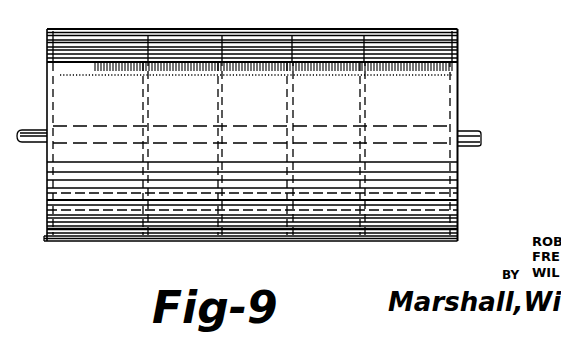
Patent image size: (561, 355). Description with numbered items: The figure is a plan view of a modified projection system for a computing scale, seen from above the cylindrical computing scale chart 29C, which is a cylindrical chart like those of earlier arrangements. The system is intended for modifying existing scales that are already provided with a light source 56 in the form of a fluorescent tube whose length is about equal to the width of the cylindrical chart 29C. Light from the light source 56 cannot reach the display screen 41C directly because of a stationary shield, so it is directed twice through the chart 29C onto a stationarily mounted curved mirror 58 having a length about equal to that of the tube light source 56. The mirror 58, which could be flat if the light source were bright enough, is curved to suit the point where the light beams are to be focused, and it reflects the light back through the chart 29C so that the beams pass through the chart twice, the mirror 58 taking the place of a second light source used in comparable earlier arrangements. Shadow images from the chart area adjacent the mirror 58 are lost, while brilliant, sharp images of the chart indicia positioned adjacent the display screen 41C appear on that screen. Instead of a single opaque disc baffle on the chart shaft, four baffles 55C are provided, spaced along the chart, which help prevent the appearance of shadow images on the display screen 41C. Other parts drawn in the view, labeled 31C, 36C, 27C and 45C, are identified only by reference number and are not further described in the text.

The curved mirror 58 is at (218, 29).
The chart 29C is at (461, 71).
The end panel 31C is at (55, 108).
The baffles 55C is at (217, 122).
The center panel 36C is at (280, 102).
The shaft 27C is at (481, 138).
The light source 56 is at (440, 196).
The lower strip 45C is at (118, 231).
The display screen 41C is at (308, 252).